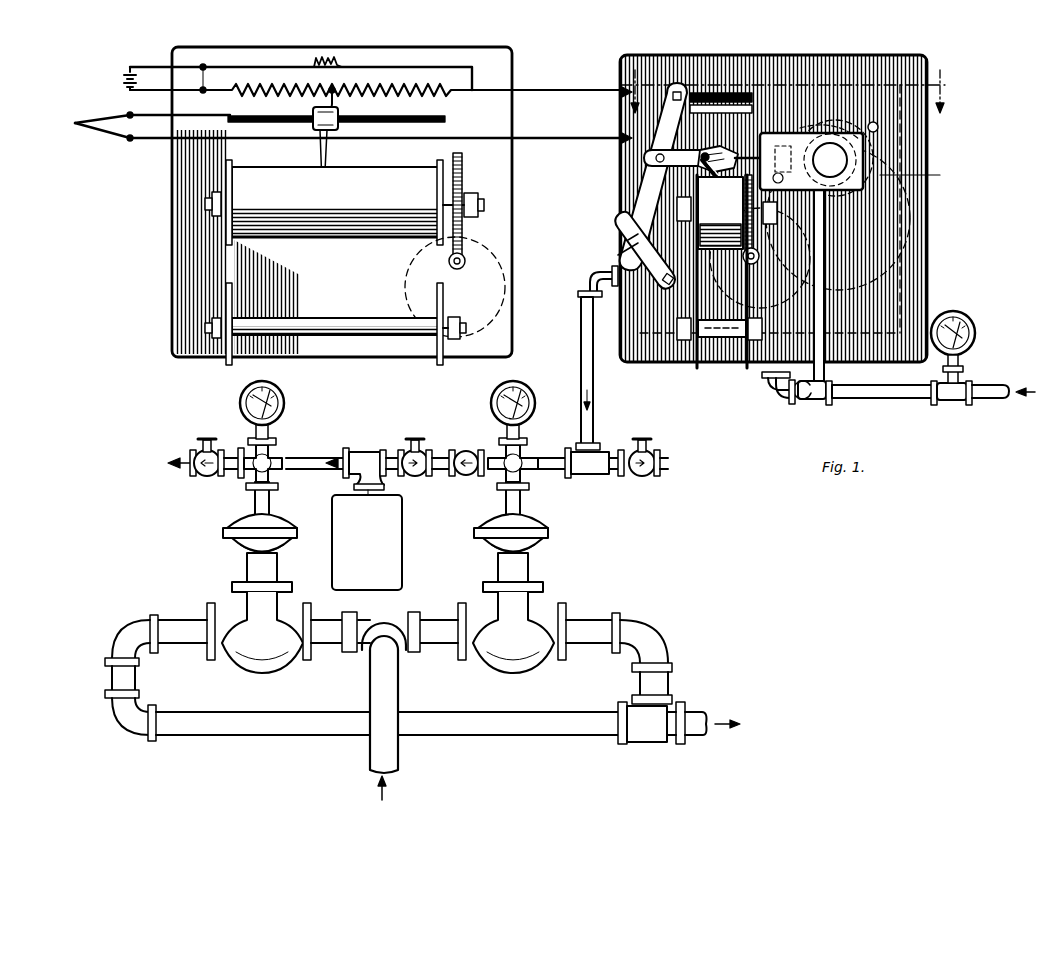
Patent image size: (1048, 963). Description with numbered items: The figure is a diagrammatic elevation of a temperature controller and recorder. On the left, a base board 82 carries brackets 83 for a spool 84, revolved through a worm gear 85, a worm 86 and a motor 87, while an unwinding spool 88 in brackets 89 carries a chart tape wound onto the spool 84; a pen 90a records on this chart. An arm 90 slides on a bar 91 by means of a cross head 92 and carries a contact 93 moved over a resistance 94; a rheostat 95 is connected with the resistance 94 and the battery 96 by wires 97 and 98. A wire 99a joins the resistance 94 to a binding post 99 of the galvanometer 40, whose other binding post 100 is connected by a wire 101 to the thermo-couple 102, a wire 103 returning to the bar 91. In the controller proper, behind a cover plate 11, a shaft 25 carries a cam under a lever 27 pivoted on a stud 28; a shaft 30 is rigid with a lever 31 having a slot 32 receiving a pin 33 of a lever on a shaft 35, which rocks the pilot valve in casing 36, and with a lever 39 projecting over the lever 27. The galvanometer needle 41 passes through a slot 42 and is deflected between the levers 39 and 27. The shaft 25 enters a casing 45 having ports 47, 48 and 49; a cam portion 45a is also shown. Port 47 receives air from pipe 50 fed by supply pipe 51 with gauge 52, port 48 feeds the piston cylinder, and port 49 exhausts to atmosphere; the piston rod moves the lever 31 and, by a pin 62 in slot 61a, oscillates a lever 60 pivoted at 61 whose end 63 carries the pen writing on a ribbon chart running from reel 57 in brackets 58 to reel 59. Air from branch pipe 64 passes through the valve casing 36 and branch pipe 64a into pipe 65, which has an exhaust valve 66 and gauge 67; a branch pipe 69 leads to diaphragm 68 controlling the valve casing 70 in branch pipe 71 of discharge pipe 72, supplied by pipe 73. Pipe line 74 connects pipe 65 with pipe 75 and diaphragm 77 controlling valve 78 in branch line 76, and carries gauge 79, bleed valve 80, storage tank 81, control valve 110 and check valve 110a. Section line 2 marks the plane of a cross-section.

The cover plate 11 is at (928, 272).
The section line 2 is at (766, 101).
The shaft 25 is at (807, 130).
The lever 27 is at (805, 128).
The stud 28 is at (862, 140).
The shaft 30 is at (682, 85).
The lever 31 is at (660, 145).
The slot 32 is at (638, 222).
The pin 33 is at (604, 272).
The shaft 35 is at (660, 282).
The valve casing 36 is at (640, 362).
The lever 39 is at (730, 92).
The galvanometer 40 is at (847, 160).
The needle 41 is at (748, 104).
The slot 42 is at (713, 78).
The casing 45 is at (853, 170).
The cam follower 45a is at (855, 185).
The port 47 is at (918, 177).
The port 48 is at (811, 161).
The port 49 is at (877, 124).
The air pipe 50 is at (812, 400).
The air supply pipe 51 is at (900, 402).
The air pressure gauge 52 is at (968, 325).
The reel 57 is at (697, 368).
The brackets 58 is at (750, 360).
The reel 59 is at (728, 219).
The lever 60 is at (723, 183).
The pivot 61 is at (700, 162).
The slot 61a is at (675, 157).
The pin 62 is at (727, 151).
The pen end of lever 63 is at (720, 234).
The branch pipe 64 is at (772, 398).
The branch pipe 64a is at (580, 368).
The pipe 65 is at (560, 470).
The valve 66 is at (650, 476).
The pressure gauge 67 is at (492, 406).
The diaphragm 68 is at (492, 542).
The branch pipe 69 is at (506, 502).
The valve casing 70 is at (536, 618).
The branch pipe 71 is at (592, 630).
The discharge pipe 72 is at (548, 728).
The supply pipe 73 is at (396, 711).
The pipe line 74 is at (392, 455).
The pipe 75 is at (255, 505).
The branch line 76 is at (168, 622).
The diaphragm 77 is at (268, 530).
The valve 78 is at (238, 663).
The pressure gauge 79 is at (285, 404).
The valve 80 is at (200, 470).
The storage tank 81 is at (342, 560).
The base board 82 is at (172, 255).
The brackets 83 is at (208, 204).
The spool 84 is at (272, 175).
The worm gear 85 is at (464, 172).
The worm 86 is at (460, 269).
The motor 87 is at (498, 250).
The unwinding spool 88 is at (330, 322).
The brackets 89 is at (212, 340).
The arm 90 is at (330, 160).
The pen 90a is at (328, 200).
The bar 91 is at (447, 119).
The cross head 92 is at (311, 110).
The contact 93 is at (343, 104).
The resistance 94 is at (385, 92).
The rheostat 95 is at (345, 62).
The source of current 96 is at (122, 80).
The wire 97 is at (255, 67).
The wire 98 is at (190, 80).
The binding post 99 is at (626, 88).
The wire 99a is at (586, 92).
The binding post 100 is at (628, 140).
The wire 101 is at (542, 142).
The thermo-couple 102 is at (88, 126).
The wire 103 is at (160, 120).
The control valve 110 is at (420, 476).
The check valve 110a is at (470, 474).